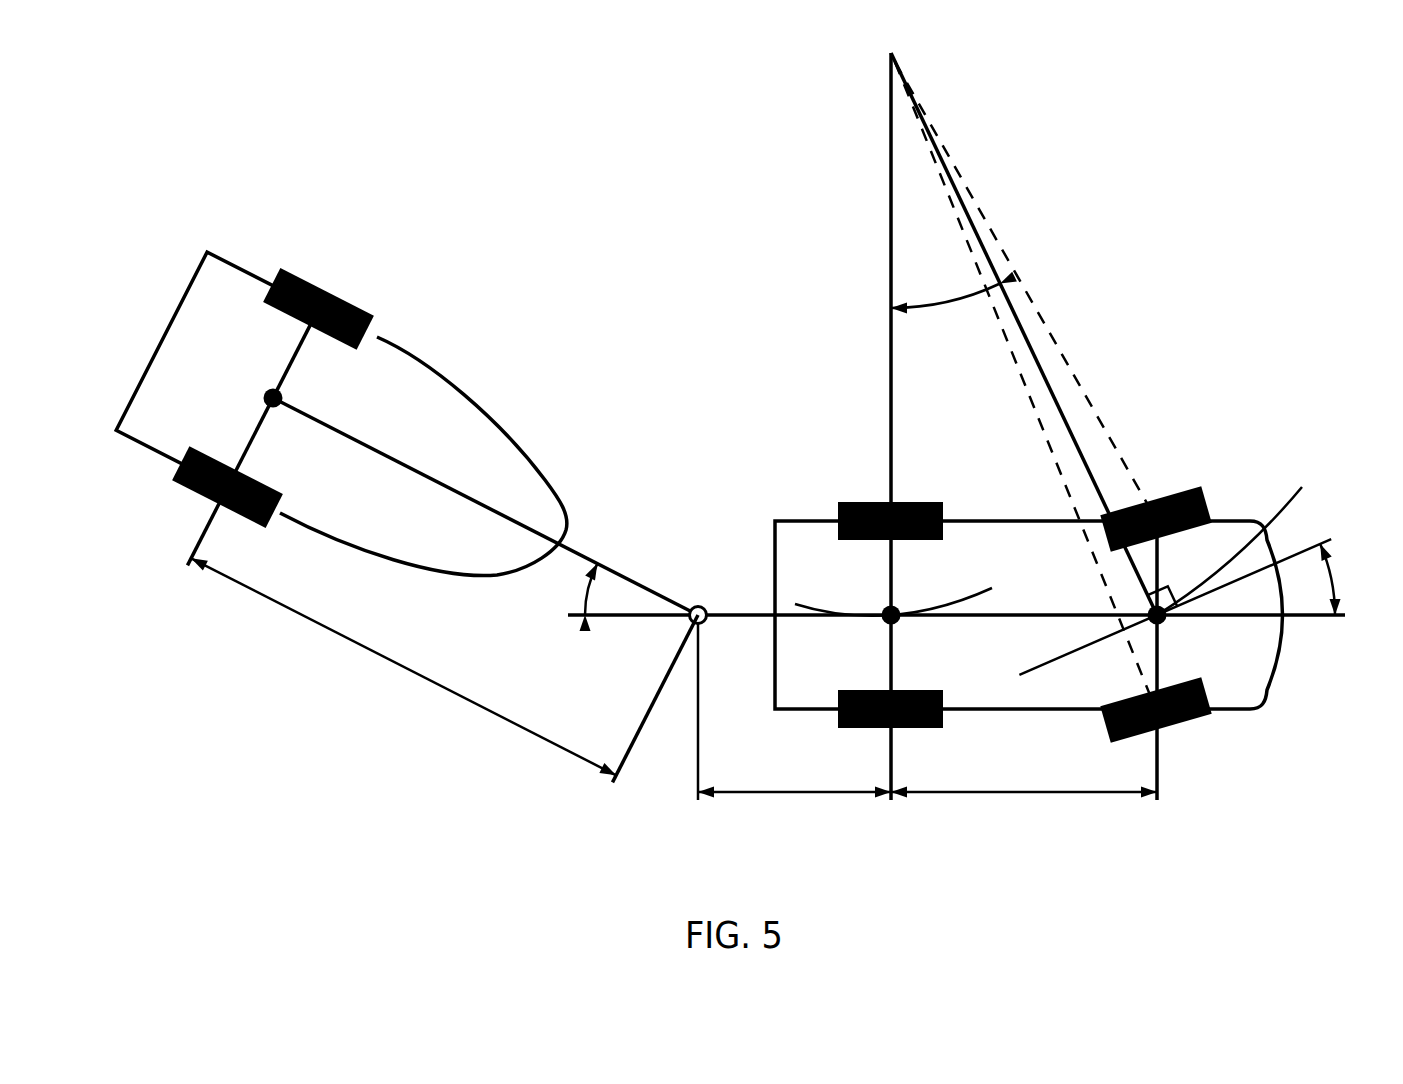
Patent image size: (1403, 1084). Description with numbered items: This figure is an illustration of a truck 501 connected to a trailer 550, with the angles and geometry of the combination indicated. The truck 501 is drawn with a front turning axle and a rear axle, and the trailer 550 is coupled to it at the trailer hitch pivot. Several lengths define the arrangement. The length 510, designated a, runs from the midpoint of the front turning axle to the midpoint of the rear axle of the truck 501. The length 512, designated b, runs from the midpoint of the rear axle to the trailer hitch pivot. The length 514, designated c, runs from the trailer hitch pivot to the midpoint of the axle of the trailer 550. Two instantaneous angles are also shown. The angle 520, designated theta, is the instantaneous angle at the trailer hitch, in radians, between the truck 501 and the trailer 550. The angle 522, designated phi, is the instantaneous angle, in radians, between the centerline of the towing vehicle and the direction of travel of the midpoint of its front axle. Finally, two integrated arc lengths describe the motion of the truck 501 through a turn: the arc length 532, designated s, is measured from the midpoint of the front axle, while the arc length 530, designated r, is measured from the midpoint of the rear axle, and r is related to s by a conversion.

The truck 501 is at (775, 560).
The length from midpoint of front axle to midpoint of rear axle 510 is at (1010, 793).
The length from midpoint of rear axle to trailer hitch pivot 512 is at (760, 793).
The length from trailer hitch pivot to midpoint of trailer axle 514 is at (300, 613).
The instantaneous angle at the trailer hitch 520 is at (580, 585).
The instantaneous angle between towing vehicle centerline and front axle direction o 522 is at (928, 307).
The integrated arc length measured from midpoint of rear axle 530 is at (977, 587).
The integrated arc length measured from midpoint of front axle 532 is at (1288, 503).
The trailer 550 is at (453, 410).